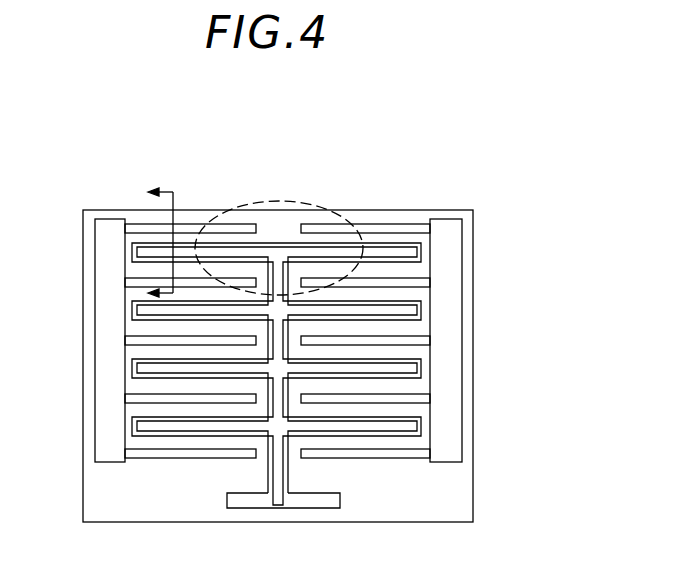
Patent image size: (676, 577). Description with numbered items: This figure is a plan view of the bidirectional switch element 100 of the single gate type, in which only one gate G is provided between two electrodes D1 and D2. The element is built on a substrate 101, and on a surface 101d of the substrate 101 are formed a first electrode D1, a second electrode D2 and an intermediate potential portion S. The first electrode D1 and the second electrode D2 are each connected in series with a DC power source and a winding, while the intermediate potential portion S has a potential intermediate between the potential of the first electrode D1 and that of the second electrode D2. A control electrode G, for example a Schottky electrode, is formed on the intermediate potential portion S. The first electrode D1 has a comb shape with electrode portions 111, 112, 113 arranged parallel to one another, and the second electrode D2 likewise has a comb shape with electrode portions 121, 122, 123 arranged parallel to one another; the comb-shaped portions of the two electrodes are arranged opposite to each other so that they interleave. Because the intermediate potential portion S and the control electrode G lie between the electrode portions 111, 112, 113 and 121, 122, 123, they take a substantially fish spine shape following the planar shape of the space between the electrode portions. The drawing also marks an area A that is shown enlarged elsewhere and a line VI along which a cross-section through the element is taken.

The bidirectional switch element 100 is at (285, 121).
The substrate 101 is at (475, 496).
The surface 101d is at (133, 502).
The electrode portion 111 is at (143, 226).
The electrode portion 112 is at (143, 281).
The electrode portion 113 is at (143, 340).
The electrode portion 121 is at (412, 223).
The electrode portion 122 is at (417, 278).
The electrode portion 123 is at (417, 338).
The first electrode D1 is at (102, 436).
The second electrode D2 is at (450, 423).
The control electrode G is at (247, 500).
The intermediate potential portion S is at (312, 503).
The area A is at (295, 202).
The line VI- VI is at (172, 244).